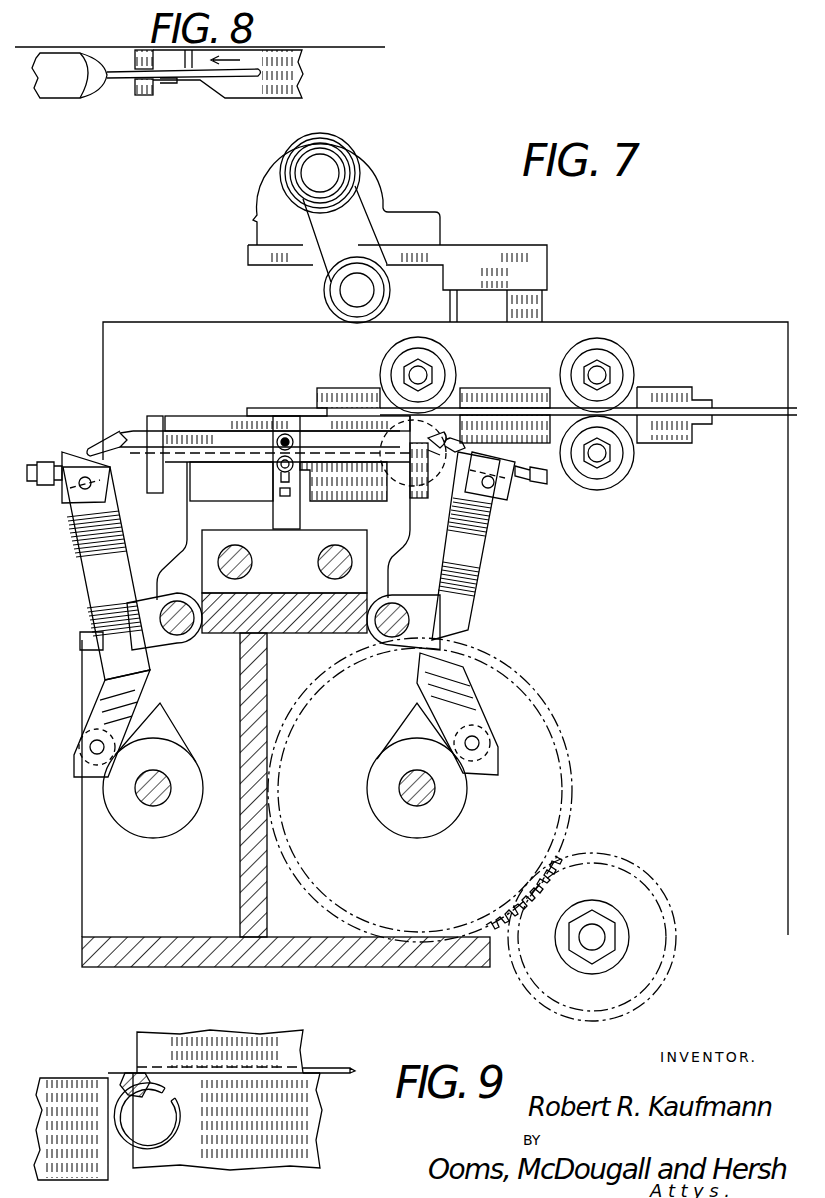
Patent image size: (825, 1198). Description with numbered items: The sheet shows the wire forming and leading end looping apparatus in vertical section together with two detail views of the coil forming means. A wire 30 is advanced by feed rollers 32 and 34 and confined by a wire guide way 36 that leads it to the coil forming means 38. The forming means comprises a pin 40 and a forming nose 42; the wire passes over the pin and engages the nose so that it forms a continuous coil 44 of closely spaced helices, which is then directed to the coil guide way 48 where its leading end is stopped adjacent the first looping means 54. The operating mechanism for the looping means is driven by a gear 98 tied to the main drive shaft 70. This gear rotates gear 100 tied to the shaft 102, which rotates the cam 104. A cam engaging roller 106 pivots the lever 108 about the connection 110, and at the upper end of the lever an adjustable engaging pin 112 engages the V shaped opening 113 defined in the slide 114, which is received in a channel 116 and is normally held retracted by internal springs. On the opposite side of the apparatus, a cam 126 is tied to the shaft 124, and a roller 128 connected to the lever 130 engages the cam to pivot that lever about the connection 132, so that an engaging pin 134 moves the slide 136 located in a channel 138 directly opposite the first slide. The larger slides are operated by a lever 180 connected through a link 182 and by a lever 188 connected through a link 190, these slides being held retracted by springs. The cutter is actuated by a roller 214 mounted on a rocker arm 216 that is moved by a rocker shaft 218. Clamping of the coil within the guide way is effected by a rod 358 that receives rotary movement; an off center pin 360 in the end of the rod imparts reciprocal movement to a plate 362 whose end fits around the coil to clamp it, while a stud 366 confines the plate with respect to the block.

In FIG. 8, the wire 30 is at (242, 77).
In FIG. 7, the wire 30 is at (740, 416).
In FIG. 9, the wire 30 is at (325, 1068).
In FIG. 7, the feed roller 32 is at (628, 364).
In FIG. 7, the feed roller 34 is at (380, 372).
In FIG. 7, the wire guide way 36 is at (552, 392).
In FIG. 9, the wire guide way 36 is at (150, 1038).
In FIG. 8, the coil forming means 38 is at (161, 124).
In FIG. 9, the coil forming means 38 is at (93, 1037).
In FIG. 8, the pin 40 is at (143, 95).
In FIG. 9, the pin 40 is at (128, 1075).
In FIG. 8, the forming nose 42 is at (98, 90).
In FIG. 9, the forming nose 42 is at (80, 1095).
In FIG. 9, the coil 44 is at (170, 1125).
In FIG. 7, the coil guide way 48 is at (285, 434).
In FIG. 7, the first looping means 54 is at (226, 389).
In FIG. 7, the main drive shaft 70 is at (598, 935).
In FIG. 7, the gear 98 is at (583, 855).
In FIG. 7, the gear 100 is at (572, 768).
In FIG. 7, the shaft 102 is at (435, 792).
In FIG. 7, the cam 104 is at (400, 730).
In FIG. 7, the cam engaging roller 106 is at (472, 718).
In FIG. 7, the lever 108 is at (470, 692).
In FIG. 7, the connection 110 is at (392, 640).
In FIG. 7, the adjustable engaging pin 112 is at (462, 445).
In FIG. 7, the V shaped opening 113 is at (438, 450).
In FIG. 7, the slide 114 is at (416, 472).
In FIG. 7, the channel 116 is at (343, 481).
In FIG. 7, the shaft 124 is at (140, 798).
In FIG. 7, the cam 126 is at (112, 820).
In FIG. 7, the roller 128 is at (97, 722).
In FIG. 7, the lever 130 is at (110, 684).
In FIG. 7, the connection 132 is at (176, 632).
In FIG. 7, the engaging pin 134 is at (103, 450).
In FIG. 7, the slide 136 is at (136, 431).
In FIG. 7, the channel 138 is at (231, 481).
In FIG. 7, the lever 180 is at (425, 553).
In FIG. 7, the link 182 is at (440, 432).
In FIG. 7, the lever 188 is at (173, 512).
In FIG. 7, the link 190 is at (150, 416).
In FIG. 7, the roller 214 is at (325, 290).
In FIG. 7, the rocker arm 216 is at (345, 193).
In FIG. 7, the rocker shaft 218 is at (322, 172).
In FIG. 7, the rod 358 is at (292, 482).
In FIG. 7, the off center pin 360 is at (280, 494).
In FIG. 7, the plate 362 is at (300, 512).
In FIG. 7, the stud 366 is at (277, 468).